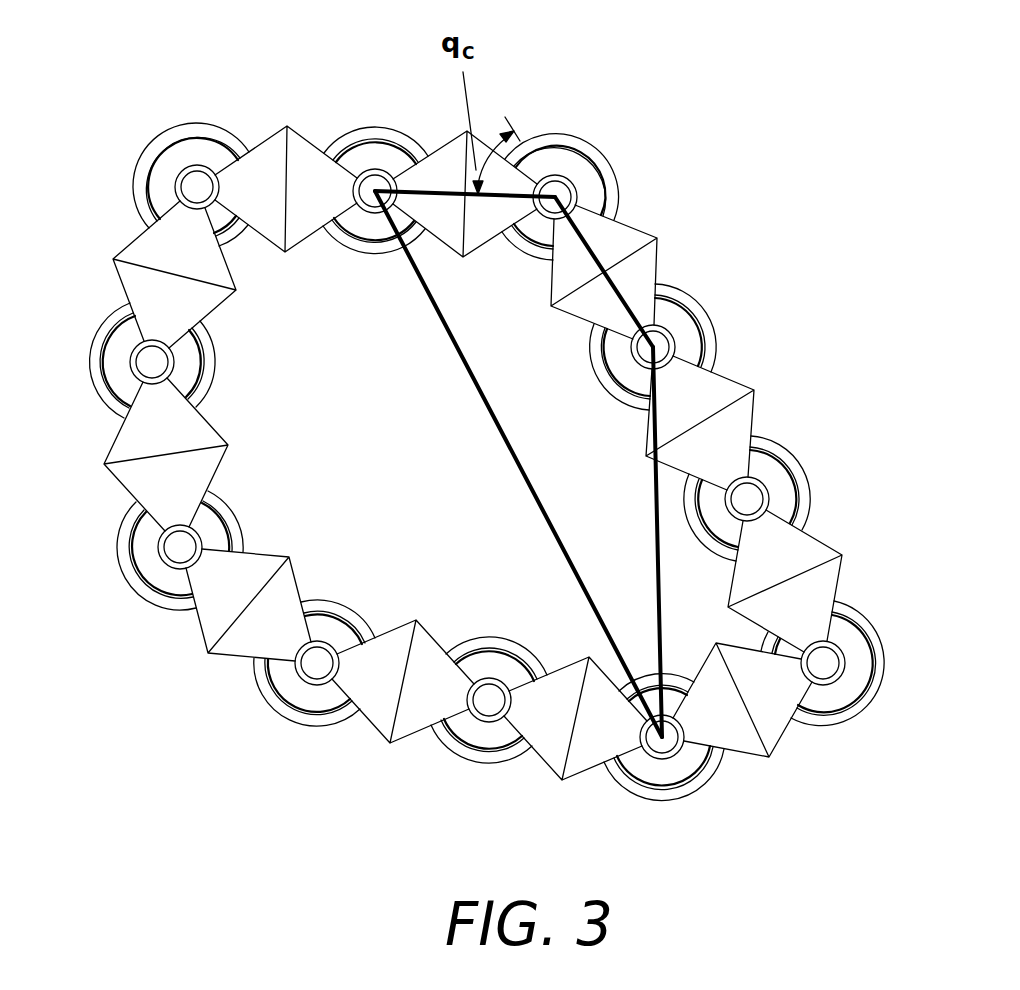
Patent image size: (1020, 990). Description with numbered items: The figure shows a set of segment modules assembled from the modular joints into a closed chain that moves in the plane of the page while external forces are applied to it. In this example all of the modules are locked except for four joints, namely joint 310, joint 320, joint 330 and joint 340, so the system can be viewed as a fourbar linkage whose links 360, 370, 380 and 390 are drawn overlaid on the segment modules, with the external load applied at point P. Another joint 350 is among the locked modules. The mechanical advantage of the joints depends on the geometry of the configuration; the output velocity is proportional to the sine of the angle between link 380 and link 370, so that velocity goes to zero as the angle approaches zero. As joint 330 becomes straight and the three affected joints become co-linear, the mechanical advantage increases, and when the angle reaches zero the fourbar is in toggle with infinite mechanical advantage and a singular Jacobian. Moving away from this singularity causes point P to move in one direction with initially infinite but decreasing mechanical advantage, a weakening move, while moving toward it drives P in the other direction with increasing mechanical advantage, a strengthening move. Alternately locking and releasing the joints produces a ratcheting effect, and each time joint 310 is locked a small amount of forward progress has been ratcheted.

The joint 310 is at (664, 740).
The joint 320 is at (655, 348).
The joint 330 is at (563, 195).
The joint 340 is at (375, 188).
The joint module 350 is at (489, 702).
The link 360 is at (658, 517).
The link 370 is at (652, 237).
The link 380 is at (438, 188).
The link 390 is at (485, 405).
The point of external load P is at (100, 323).